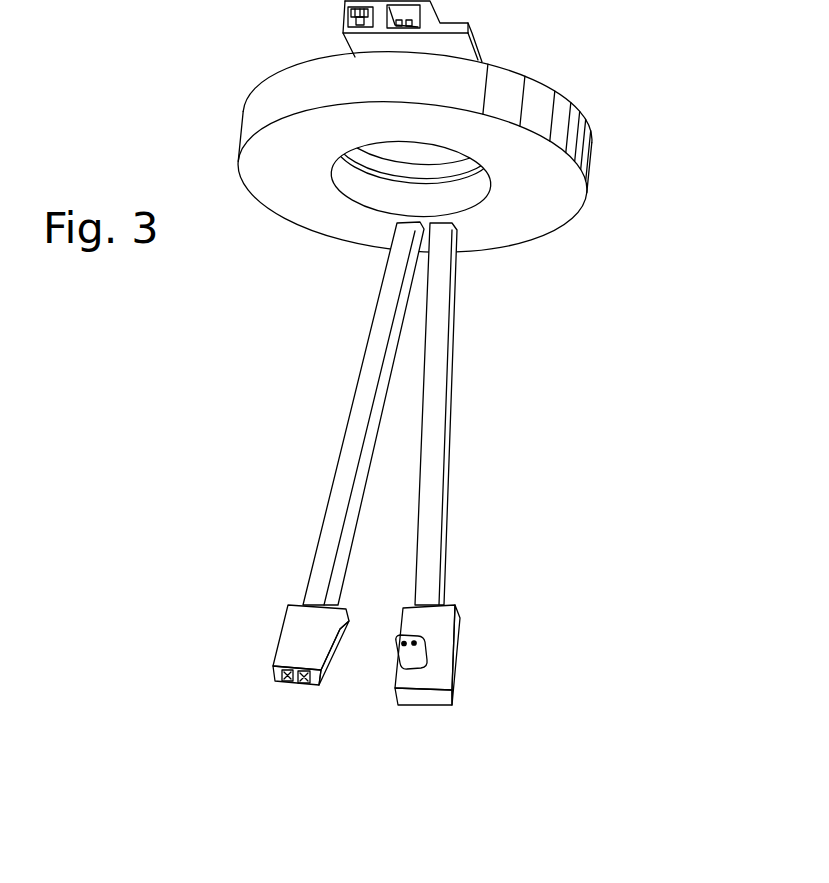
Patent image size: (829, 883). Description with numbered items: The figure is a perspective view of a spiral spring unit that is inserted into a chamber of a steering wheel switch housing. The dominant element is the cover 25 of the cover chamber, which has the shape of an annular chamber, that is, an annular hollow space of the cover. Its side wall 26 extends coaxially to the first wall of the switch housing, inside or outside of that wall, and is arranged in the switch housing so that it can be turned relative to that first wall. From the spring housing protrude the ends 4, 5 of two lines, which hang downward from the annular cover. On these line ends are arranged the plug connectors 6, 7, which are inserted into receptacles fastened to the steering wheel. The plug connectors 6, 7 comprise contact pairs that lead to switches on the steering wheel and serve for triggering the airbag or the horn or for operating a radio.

The end of line 4 is at (333, 518).
The end of line 5 is at (438, 514).
The plug connector 6 is at (300, 638).
The plug connector 7 is at (445, 647).
The cover 25 is at (553, 198).
The side wall 26 is at (263, 105).